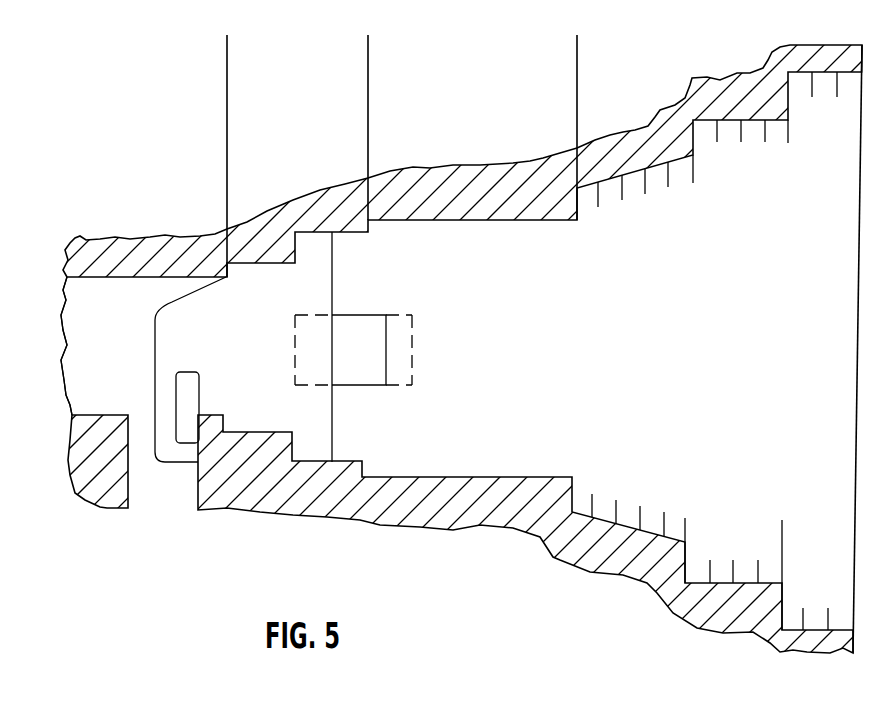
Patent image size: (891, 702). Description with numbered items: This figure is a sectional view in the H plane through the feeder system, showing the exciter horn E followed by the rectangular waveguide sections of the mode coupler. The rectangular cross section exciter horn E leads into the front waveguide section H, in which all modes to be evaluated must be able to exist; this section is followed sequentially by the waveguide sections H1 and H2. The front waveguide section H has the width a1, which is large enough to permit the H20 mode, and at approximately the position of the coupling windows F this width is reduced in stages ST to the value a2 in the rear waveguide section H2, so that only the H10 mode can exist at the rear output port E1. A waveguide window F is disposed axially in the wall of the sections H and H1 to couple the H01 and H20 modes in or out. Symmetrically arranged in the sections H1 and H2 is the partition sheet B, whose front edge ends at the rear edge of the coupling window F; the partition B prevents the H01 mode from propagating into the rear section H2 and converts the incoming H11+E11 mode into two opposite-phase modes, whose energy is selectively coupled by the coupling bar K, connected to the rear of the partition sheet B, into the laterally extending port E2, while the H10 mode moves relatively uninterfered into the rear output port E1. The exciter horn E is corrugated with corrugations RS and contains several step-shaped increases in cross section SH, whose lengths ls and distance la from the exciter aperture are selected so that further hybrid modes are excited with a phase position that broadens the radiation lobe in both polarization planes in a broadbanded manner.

The rear waveguide section H2 is at (113, 225).
The waveguide section H1 is at (265, 156).
The front waveguide section H is at (420, 127).
The exciter horn E is at (707, 127).
The stages ST is at (317, 231).
The rear output port E1 is at (73, 346).
The port E2 is at (116, 471).
The reduced waveguide width a2 is at (115, 278).
The waveguide width a1 is at (493, 221).
The coupling bar K is at (175, 450).
The partition sheet B is at (259, 402).
The coupling window F is at (363, 363).
The corrugations RS is at (628, 517).
The step-shaped increases in cross section SH is at (662, 590).
The step length ls is at (781, 529).
The distance from exciter aperture la is at (852, 529).